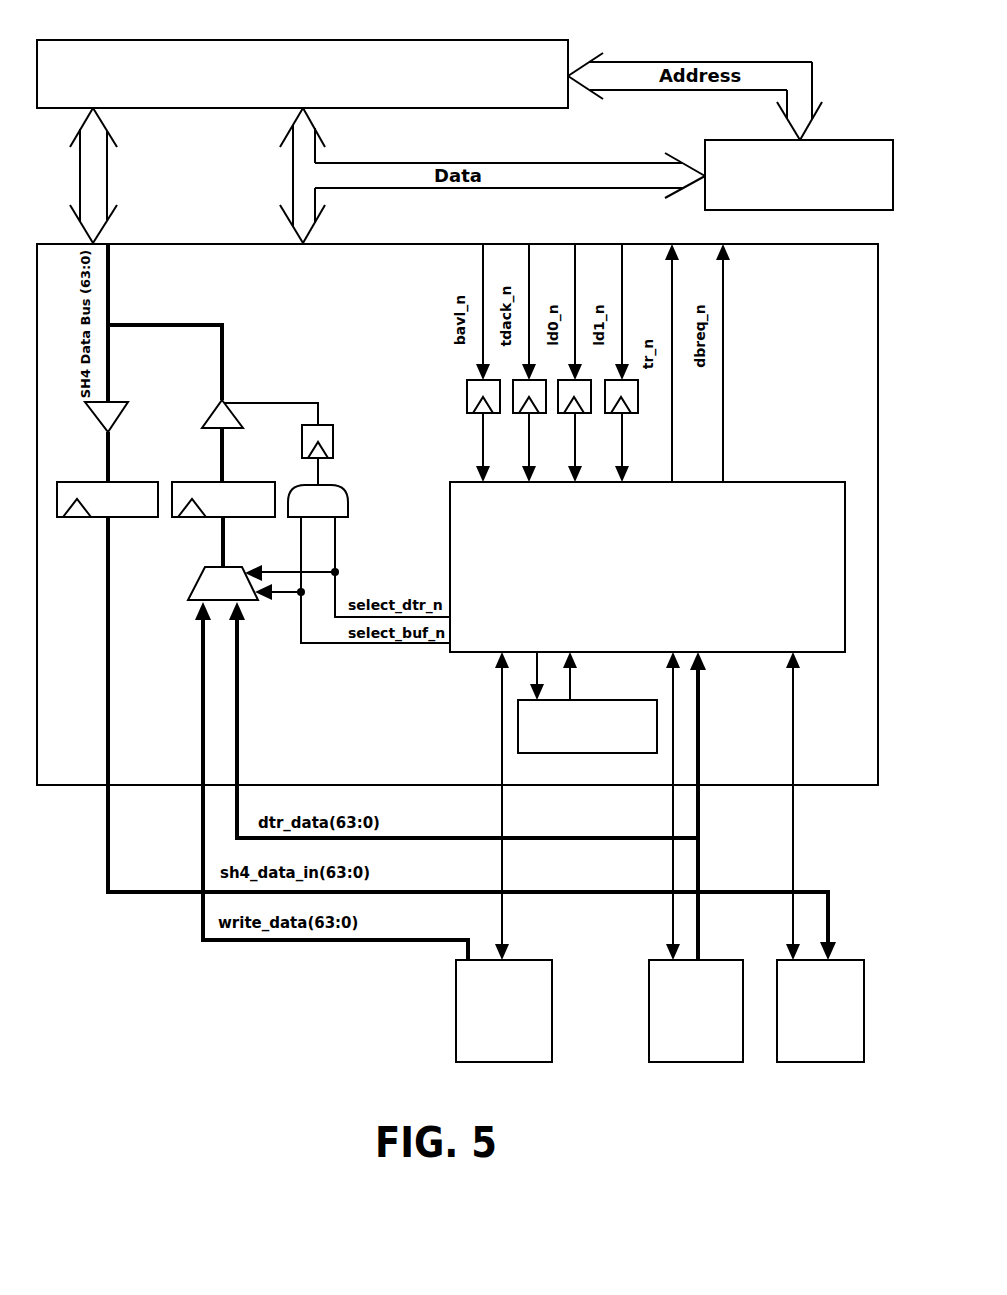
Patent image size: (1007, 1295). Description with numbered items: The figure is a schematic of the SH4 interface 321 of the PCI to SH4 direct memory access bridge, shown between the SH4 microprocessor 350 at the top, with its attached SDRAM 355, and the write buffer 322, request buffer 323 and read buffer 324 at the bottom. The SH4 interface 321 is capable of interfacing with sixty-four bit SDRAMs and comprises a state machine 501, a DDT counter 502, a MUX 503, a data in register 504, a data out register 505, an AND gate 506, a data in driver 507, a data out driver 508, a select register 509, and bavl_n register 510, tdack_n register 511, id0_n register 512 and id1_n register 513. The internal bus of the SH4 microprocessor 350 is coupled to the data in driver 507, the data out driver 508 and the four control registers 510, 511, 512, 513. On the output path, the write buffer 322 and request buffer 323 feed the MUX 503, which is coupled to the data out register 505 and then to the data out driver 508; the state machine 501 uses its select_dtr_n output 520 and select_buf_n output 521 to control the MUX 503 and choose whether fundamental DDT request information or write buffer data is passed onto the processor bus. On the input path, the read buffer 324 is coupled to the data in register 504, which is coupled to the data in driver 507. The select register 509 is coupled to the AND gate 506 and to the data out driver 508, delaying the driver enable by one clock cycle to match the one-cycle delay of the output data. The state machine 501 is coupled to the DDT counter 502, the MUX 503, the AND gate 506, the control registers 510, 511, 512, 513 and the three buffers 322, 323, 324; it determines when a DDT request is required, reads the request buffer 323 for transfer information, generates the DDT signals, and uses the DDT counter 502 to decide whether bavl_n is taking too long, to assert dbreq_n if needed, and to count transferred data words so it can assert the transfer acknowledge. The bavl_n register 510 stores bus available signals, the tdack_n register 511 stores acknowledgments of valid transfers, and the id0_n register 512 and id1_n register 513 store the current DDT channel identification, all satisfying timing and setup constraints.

The SH4 microprocessor 350 is at (318, 87).
The SDRAM 355 is at (781, 202).
The SH4 interface 321 is at (284, 312).
The state machine 501 is at (627, 590).
The DDT counter 502 is at (607, 738).
The MUX 503 is at (209, 593).
The data in register 504 is at (104, 510).
The data out register 505 is at (220, 510).
The AND gate 506 is at (304, 512).
The data in driver 507 is at (96, 417).
The data out driver 508 is at (205, 425).
The select register 509 is at (334, 430).
The bavl_n register 510 is at (477, 413).
The tdack_n register 511 is at (523, 413).
The id0_n register 512 is at (569, 413).
The id1_n register 513 is at (615, 413).
The select_dtr_n output 520 is at (337, 596).
The select_buf_n output 521 is at (360, 643).
The write buffer 322 is at (488, 1044).
The request buffer 323 is at (680, 1044).
The read buffer 324 is at (804, 1044).